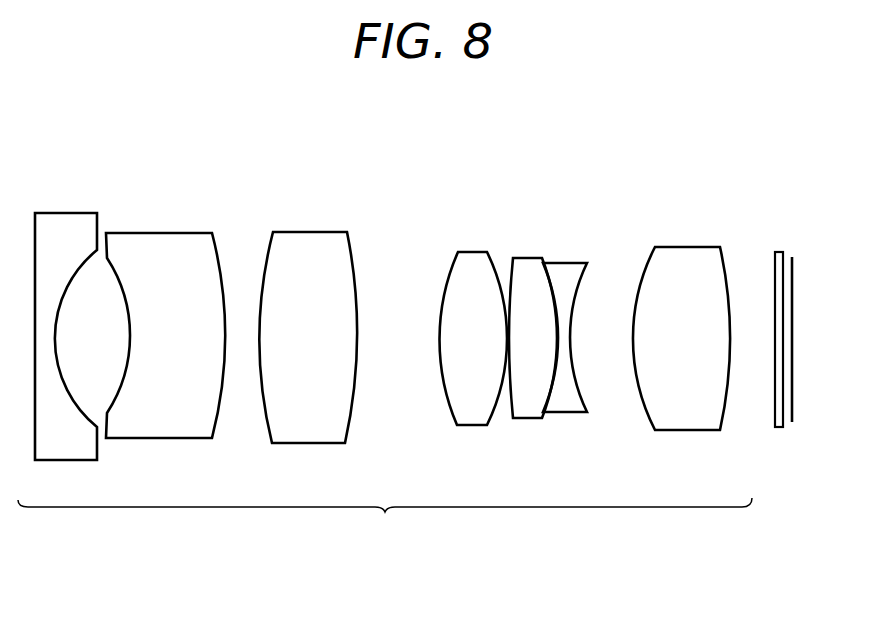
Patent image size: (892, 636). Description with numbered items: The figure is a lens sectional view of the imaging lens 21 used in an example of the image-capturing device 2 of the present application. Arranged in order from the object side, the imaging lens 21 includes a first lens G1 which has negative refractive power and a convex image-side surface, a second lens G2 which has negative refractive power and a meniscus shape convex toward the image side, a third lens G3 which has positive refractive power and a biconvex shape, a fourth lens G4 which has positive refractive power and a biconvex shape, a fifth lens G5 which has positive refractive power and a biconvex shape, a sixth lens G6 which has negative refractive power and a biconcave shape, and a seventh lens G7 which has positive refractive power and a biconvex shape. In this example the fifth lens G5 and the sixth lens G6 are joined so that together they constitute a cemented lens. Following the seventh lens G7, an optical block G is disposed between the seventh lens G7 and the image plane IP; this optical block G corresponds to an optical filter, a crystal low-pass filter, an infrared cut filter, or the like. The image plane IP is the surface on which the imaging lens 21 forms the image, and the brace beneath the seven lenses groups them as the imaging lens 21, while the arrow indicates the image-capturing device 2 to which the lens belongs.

The first lens G1 is at (63, 213).
The second lens G2 is at (165, 233).
The third lens G3 is at (310, 232).
The fourth lens G4 is at (472, 252).
The fifth lens G5 is at (527, 258).
The sixth lens G6 is at (570, 263).
The seventh lens G7 is at (678, 247).
The optical block G is at (776, 252).
The image plane IP is at (794, 270).
The imaging lens 21 is at (385, 525).
The image-capturing device 2 is at (763, 508).